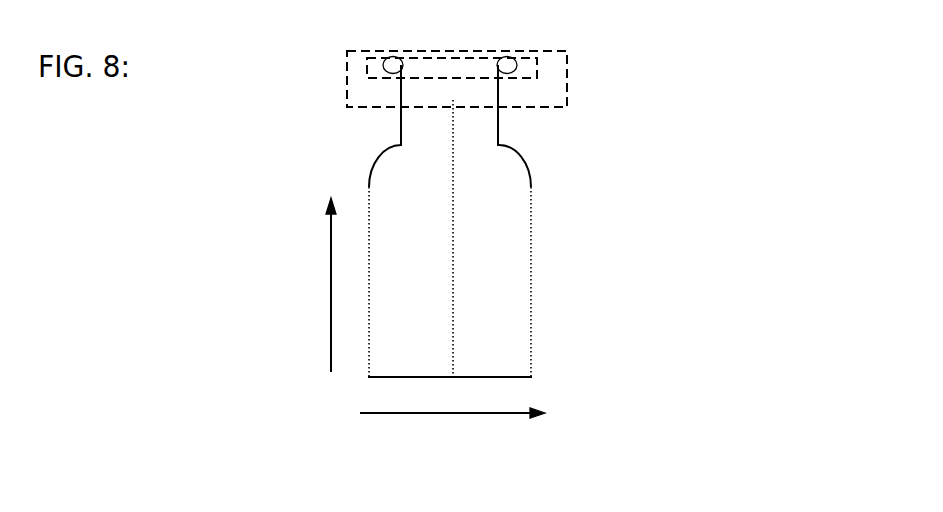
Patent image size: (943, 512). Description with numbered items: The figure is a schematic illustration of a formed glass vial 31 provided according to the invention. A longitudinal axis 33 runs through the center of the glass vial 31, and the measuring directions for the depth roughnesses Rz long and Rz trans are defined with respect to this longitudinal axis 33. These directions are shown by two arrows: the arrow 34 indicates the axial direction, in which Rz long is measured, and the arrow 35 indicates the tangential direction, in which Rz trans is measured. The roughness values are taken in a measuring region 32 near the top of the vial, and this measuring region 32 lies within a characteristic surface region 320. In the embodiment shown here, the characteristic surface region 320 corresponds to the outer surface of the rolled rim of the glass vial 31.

The glass vial 31 is at (530, 170).
The measuring region 32 is at (537, 78).
The characteristic surface region 320 is at (347, 87).
The longitudinal axis 33 is at (455, 327).
The arrow 34 is at (331, 280).
The arrow 35 is at (448, 418).